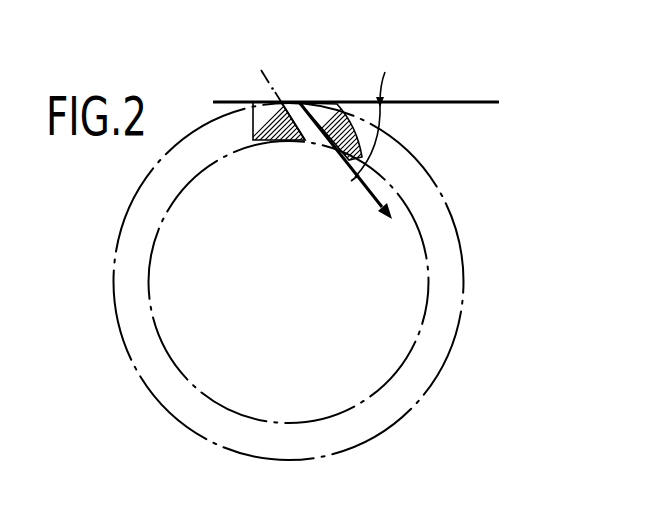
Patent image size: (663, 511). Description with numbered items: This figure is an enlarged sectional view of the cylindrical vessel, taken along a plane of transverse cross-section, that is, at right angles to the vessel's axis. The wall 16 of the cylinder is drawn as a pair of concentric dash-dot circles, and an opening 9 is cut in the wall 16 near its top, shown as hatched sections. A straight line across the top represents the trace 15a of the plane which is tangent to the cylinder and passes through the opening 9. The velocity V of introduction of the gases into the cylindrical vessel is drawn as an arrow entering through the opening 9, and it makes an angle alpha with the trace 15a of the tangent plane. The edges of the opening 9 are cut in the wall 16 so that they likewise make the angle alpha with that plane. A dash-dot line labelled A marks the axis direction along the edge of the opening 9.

The opening 9 is at (253, 92).
The trace of the plane 15a is at (467, 102).
The wall of the cylinder 16 is at (448, 283).
The axis line A is at (270, 84).
The velocity of introduction of the gases V is at (353, 178).